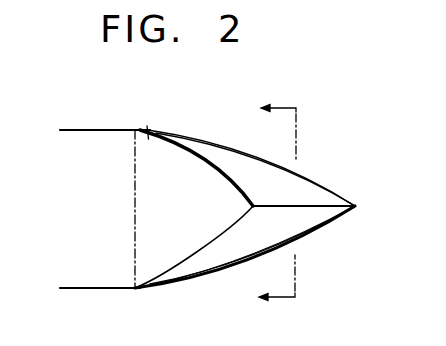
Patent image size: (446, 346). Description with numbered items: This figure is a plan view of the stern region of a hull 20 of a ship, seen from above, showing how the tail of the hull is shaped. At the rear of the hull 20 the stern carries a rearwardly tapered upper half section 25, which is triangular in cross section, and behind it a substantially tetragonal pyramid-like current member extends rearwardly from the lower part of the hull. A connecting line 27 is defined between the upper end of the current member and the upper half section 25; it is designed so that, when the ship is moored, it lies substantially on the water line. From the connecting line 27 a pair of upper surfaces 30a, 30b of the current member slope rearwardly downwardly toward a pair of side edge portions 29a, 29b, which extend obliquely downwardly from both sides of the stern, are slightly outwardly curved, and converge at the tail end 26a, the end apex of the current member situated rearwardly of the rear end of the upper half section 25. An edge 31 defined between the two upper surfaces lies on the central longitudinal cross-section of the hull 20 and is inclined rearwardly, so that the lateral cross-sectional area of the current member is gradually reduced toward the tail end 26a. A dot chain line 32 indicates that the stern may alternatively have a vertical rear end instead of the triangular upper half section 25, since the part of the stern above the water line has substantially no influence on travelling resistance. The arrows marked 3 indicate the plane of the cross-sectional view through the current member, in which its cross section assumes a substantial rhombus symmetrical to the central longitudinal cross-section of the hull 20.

The hull 20 is at (73, 129).
The upper half section 25 is at (151, 122).
The connecting line 27 is at (240, 191).
The side edge portion 29a is at (309, 236).
The side edge portion 29b is at (307, 172).
The upper surface 30a is at (341, 202).
The upper surface 30b is at (218, 146).
The tail end 26a is at (355, 208).
The edge 31 is at (273, 208).
The dot chain line 32 is at (132, 188).
The section line 3- 3 is at (276, 204).